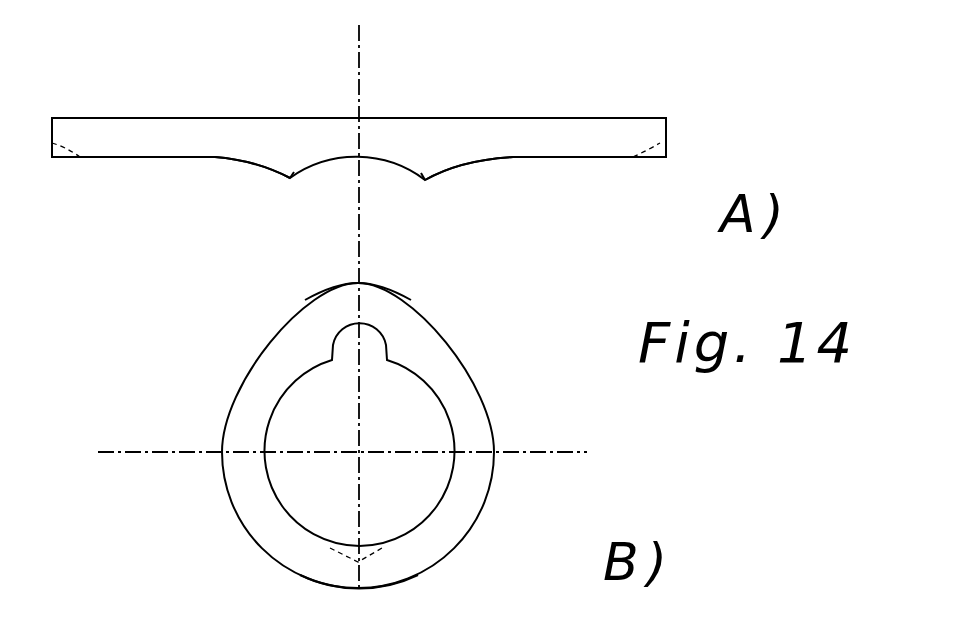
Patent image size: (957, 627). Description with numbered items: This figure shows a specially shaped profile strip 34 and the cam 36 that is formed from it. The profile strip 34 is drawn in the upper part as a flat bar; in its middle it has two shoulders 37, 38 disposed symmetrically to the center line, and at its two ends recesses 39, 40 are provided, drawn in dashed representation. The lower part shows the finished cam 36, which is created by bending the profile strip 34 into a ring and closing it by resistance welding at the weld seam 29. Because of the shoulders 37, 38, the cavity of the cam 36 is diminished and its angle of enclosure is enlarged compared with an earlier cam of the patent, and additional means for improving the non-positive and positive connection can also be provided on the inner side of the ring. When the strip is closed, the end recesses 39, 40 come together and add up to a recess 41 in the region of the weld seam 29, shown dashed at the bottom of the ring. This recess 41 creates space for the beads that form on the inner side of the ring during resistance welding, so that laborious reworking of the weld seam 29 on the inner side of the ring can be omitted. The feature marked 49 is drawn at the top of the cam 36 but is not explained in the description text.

The profile strip 34 is at (500, 127).
The recess 39 is at (52, 158).
The recess 40 is at (650, 160).
The shoulder 37 is at (290, 178).
The shoulder 38 is at (425, 180).
The central arcuate portion 49 is at (358, 283).
The cam 36 is at (242, 403).
The recess 41 is at (347, 550).
The weld seam 29 is at (362, 572).